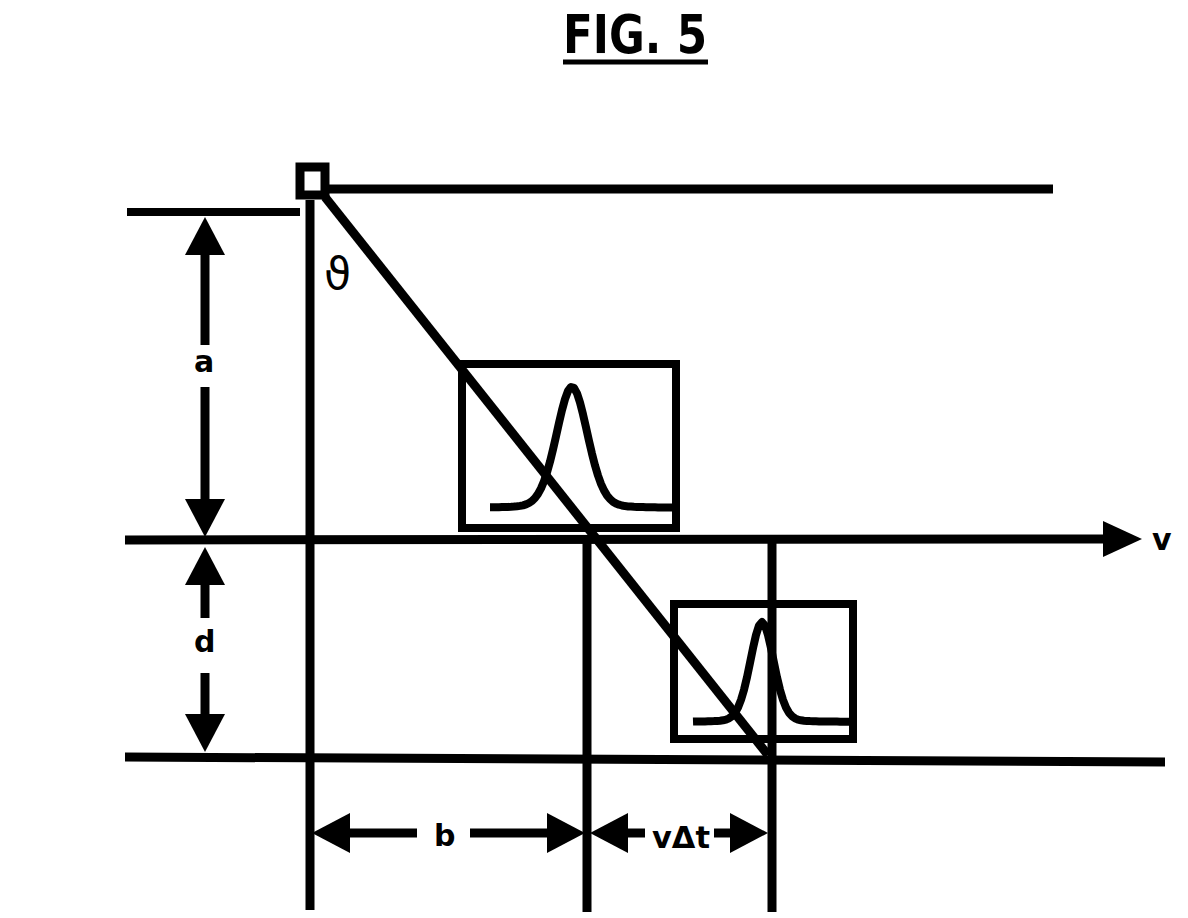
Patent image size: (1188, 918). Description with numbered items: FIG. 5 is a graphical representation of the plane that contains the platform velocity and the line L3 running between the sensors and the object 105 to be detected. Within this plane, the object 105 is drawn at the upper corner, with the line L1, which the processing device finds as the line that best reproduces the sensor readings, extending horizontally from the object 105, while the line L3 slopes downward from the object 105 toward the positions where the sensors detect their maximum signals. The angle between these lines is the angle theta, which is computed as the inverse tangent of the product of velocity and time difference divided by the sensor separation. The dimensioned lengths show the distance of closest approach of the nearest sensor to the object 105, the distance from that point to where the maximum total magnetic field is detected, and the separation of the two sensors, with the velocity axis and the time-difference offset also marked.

The object 105 is at (312, 163).
The line L1 is at (711, 192).
The line L3 is at (393, 275).